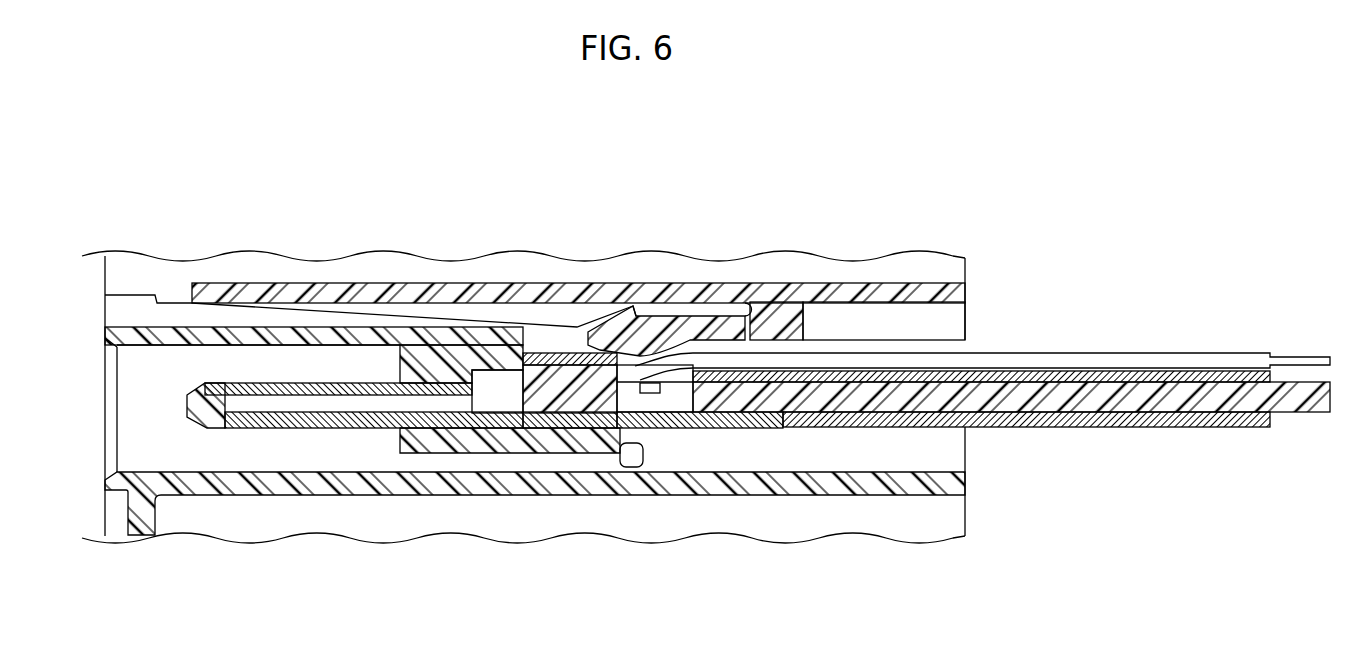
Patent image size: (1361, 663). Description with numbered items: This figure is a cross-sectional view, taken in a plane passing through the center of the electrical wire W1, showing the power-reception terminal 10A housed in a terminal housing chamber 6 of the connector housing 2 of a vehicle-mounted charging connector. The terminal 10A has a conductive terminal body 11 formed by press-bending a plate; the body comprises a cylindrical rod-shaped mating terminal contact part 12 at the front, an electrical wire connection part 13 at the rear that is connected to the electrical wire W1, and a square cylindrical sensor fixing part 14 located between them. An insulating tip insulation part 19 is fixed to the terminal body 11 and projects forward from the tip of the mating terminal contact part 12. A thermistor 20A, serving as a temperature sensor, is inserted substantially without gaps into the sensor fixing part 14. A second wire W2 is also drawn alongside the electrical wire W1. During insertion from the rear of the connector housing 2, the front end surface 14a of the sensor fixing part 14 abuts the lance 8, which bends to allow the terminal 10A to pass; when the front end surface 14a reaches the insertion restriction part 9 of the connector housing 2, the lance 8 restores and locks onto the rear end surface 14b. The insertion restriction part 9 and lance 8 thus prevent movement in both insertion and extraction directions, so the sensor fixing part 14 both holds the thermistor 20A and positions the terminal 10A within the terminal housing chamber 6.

The connector housing 2 is at (688, 292).
The terminal housing chamber 6 is at (367, 358).
The lance 8 is at (640, 325).
The insertion restriction part 9 is at (482, 396).
The power-reception terminal 10A is at (183, 406).
The terminal body 11 is at (286, 377).
The mating terminal contact part 12 is at (297, 424).
The electrical wire connection part 13 is at (752, 372).
The sensor fixing part 14 is at (558, 358).
The front end surface 14a is at (526, 416).
The rear end surface 14b is at (612, 425).
The tip insulation part 19 is at (190, 412).
The thermistor 20A is at (573, 400).
The electrical wire W1 is at (1105, 402).
The second electric wire W2 is at (1022, 352).